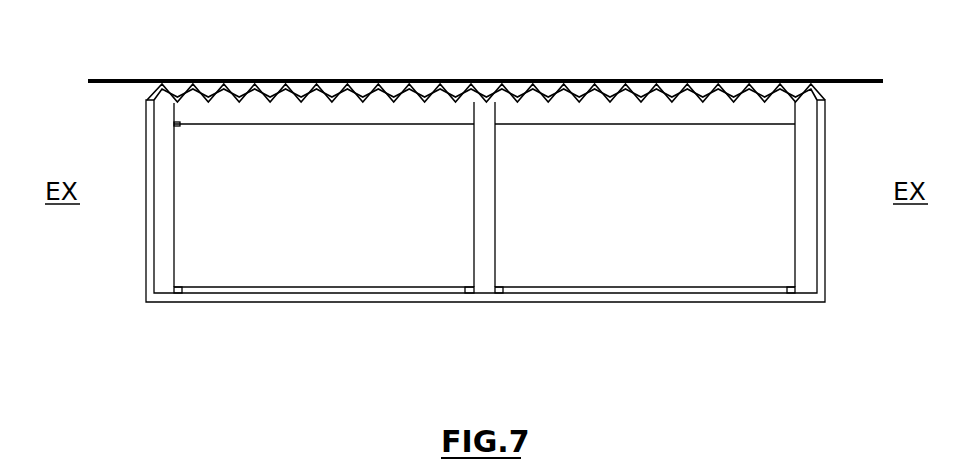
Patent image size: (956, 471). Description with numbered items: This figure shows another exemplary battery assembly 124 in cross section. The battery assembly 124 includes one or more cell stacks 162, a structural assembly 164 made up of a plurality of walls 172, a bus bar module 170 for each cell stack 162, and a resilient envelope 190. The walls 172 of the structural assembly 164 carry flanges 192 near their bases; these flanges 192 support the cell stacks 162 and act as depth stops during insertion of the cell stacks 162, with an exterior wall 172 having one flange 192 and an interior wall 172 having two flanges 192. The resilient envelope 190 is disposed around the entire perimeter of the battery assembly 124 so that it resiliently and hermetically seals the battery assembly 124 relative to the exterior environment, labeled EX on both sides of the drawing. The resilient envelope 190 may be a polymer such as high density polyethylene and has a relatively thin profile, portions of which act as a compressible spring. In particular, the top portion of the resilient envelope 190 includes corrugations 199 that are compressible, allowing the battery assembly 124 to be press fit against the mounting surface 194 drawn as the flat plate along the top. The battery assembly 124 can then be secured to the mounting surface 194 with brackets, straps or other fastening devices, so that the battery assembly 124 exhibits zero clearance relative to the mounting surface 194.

The battery assembly 124 is at (362, 366).
The cell stack 162 is at (671, 321).
The structural assembly 164 is at (147, 322).
The bus bar module 170 is at (670, 117).
The wall 172 is at (850, 153).
The resilient envelope 190 is at (148, 152).
The flange 192 is at (801, 329).
The mounting surface 194 is at (863, 40).
The corrugation 199 is at (523, 39).